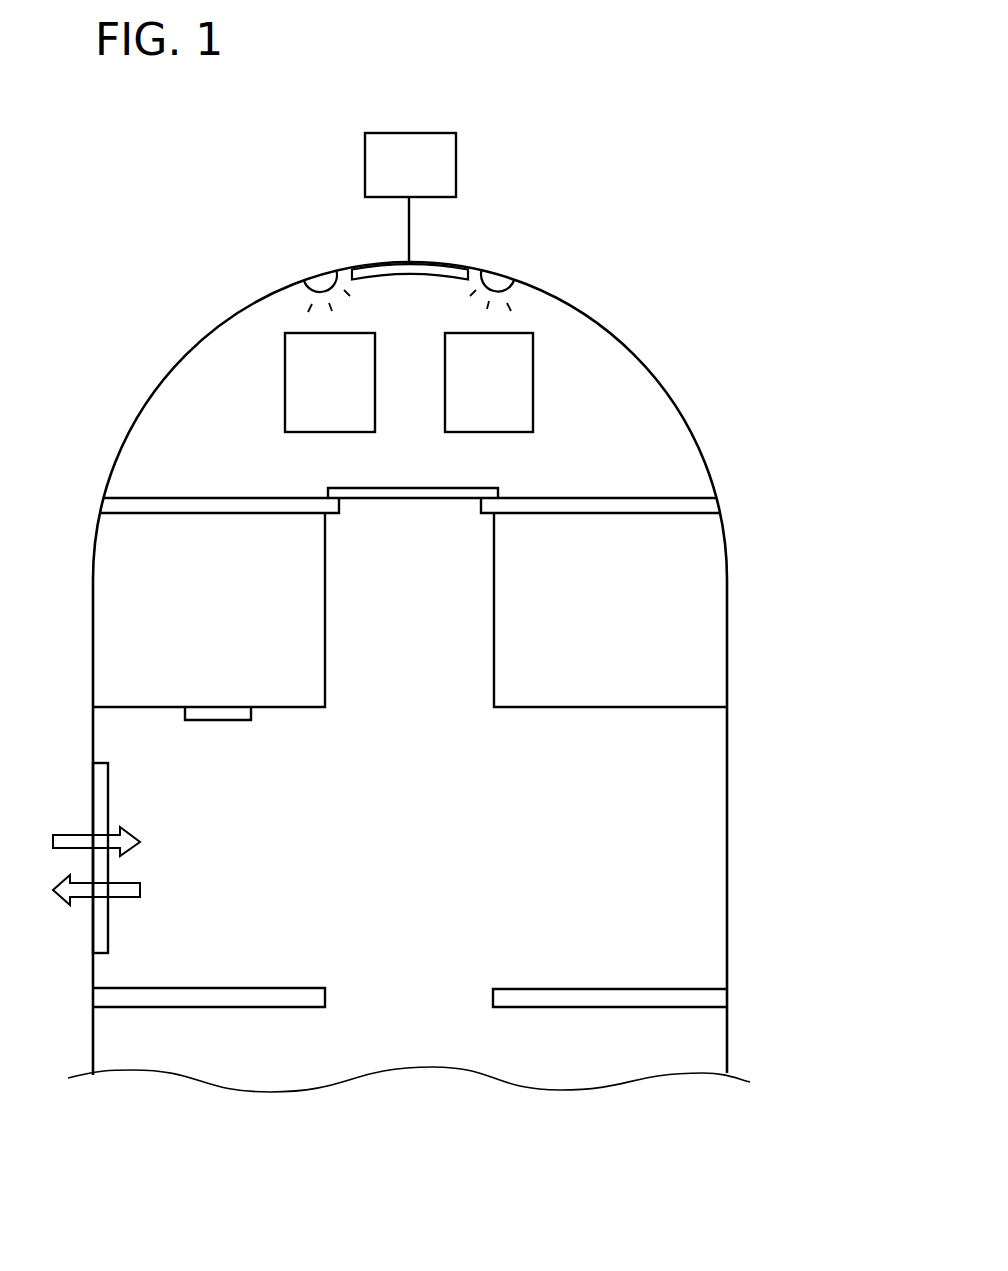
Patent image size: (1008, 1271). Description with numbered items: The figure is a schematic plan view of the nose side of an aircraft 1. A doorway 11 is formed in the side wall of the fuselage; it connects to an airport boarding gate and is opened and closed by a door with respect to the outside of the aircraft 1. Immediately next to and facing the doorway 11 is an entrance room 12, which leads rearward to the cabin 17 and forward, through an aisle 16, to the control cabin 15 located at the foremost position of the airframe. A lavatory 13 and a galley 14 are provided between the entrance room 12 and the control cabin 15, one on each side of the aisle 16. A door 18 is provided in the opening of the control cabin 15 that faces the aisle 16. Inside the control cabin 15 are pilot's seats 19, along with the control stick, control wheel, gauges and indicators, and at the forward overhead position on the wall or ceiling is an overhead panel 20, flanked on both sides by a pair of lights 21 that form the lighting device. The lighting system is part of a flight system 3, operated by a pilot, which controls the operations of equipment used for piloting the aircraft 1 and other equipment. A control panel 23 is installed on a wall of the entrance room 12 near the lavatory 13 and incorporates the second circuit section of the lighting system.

The aircraft 1 is at (584, 155).
The flight system 3 is at (422, 132).
The doorway 11 is at (97, 774).
The entrance room 12 is at (400, 875).
The lavatory 13 is at (211, 630).
The galley 14 is at (599, 628).
The control cabin 15 is at (576, 472).
The aisle 16 is at (384, 644).
The cabin 17 is at (401, 1059).
The door 18 is at (458, 500).
The pilot's seats 19 is at (285, 393).
The overhead panel 20 is at (425, 281).
The lights 21 is at (322, 273).
The control panel 23 is at (215, 722).